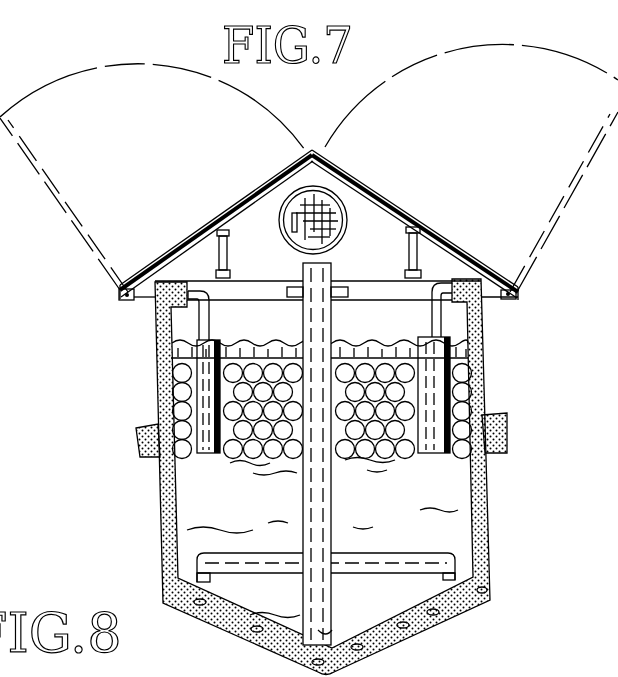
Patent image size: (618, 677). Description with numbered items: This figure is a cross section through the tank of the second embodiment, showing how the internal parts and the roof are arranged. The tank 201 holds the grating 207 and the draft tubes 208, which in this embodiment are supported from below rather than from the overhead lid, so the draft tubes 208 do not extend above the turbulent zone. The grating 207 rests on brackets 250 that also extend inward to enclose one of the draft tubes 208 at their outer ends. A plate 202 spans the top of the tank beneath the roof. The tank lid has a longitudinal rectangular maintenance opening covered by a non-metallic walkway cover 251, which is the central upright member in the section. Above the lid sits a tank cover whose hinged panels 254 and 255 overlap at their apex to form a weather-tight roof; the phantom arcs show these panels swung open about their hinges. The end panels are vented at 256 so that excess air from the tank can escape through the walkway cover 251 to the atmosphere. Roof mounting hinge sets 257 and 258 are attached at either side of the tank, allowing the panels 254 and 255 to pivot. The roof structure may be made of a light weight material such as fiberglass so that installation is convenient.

The tank 201 is at (160, 505).
The top plate 202 is at (254, 281).
The grating 207 is at (350, 340).
The draft tubes 208 is at (208, 455).
The brackets 250 is at (157, 388).
The walkway cover 251 is at (338, 279).
The hinged panel 254 is at (219, 229).
The hinged panel 255 is at (432, 221).
The vent 256 is at (344, 219).
The roof mounting hinge set 257 is at (132, 301).
The roof mounting hinge set 258 is at (512, 303).